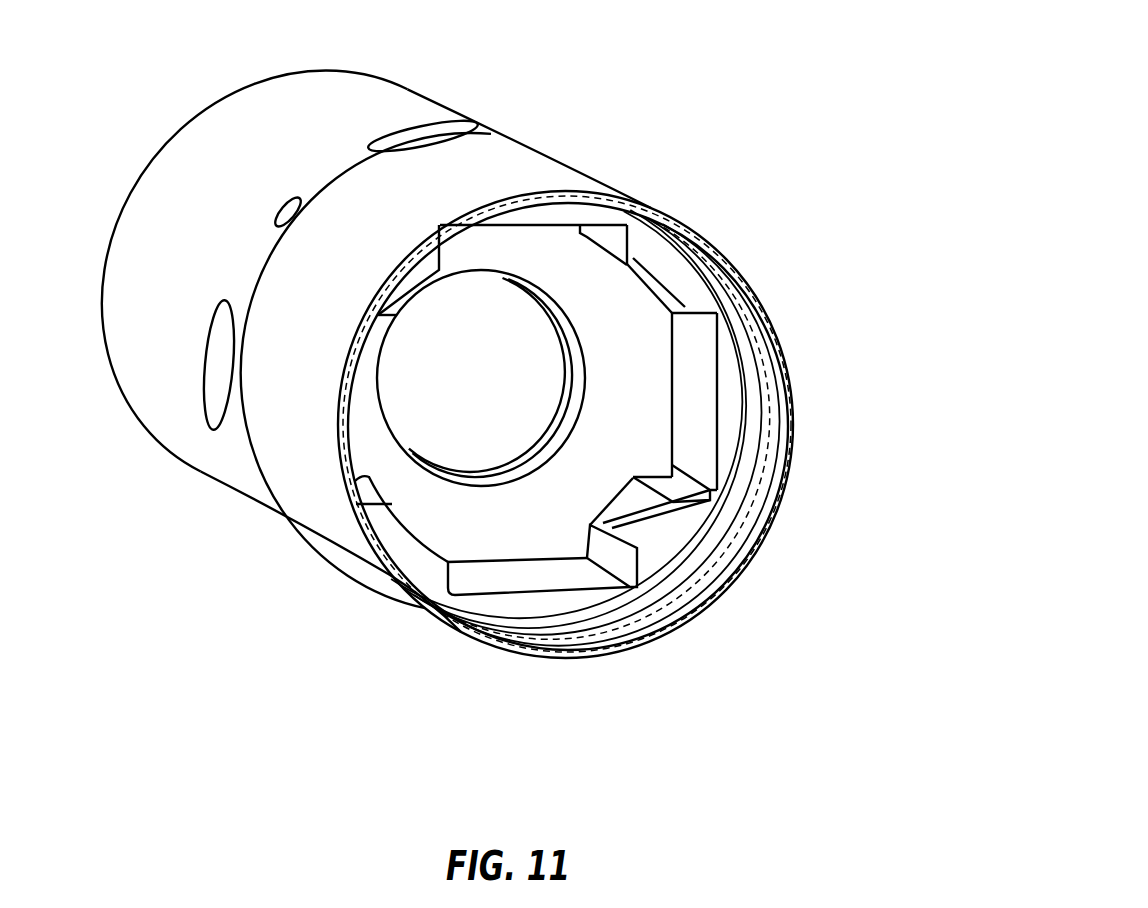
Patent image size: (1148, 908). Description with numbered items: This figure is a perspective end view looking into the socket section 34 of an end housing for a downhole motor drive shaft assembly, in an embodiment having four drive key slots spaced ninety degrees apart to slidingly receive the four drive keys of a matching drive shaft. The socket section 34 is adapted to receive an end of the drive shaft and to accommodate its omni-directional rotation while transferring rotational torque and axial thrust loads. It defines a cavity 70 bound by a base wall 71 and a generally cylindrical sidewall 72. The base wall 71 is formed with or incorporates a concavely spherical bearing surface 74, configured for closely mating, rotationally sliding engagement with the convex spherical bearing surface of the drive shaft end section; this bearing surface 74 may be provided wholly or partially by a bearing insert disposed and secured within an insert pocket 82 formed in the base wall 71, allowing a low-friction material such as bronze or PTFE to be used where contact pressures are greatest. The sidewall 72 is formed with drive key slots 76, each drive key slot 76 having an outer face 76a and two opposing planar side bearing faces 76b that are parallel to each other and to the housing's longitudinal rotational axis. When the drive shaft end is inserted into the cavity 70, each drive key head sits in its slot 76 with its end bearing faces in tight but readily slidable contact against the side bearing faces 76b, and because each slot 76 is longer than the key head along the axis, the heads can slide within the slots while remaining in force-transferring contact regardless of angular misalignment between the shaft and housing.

The socket section 34 is at (533, 102).
The cavity 70 is at (650, 433).
The base wall 71 is at (640, 353).
The sidewall 72 is at (670, 275).
The spherical bearing surface 74 is at (423, 503).
The drive key slot 76 is at (485, 250).
The outer face 76a is at (515, 577).
The side bearing face 76b is at (603, 237).
The insert pocket 82 is at (452, 383).